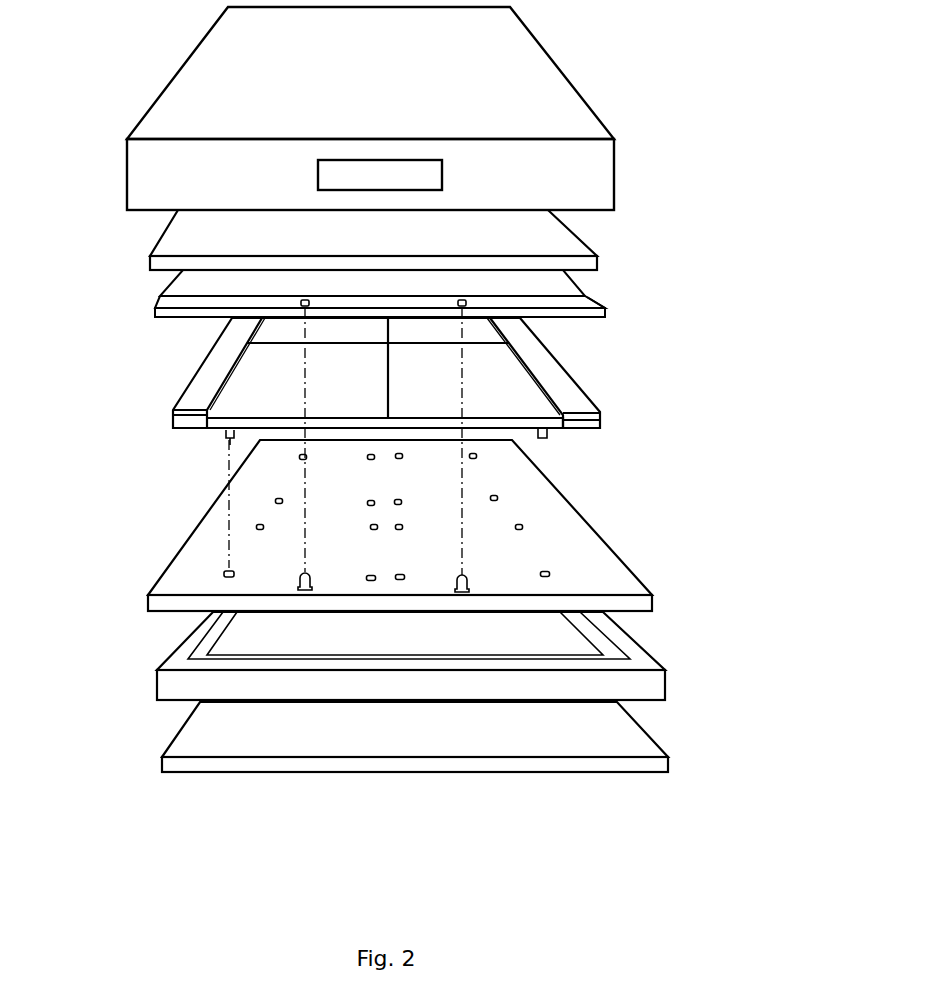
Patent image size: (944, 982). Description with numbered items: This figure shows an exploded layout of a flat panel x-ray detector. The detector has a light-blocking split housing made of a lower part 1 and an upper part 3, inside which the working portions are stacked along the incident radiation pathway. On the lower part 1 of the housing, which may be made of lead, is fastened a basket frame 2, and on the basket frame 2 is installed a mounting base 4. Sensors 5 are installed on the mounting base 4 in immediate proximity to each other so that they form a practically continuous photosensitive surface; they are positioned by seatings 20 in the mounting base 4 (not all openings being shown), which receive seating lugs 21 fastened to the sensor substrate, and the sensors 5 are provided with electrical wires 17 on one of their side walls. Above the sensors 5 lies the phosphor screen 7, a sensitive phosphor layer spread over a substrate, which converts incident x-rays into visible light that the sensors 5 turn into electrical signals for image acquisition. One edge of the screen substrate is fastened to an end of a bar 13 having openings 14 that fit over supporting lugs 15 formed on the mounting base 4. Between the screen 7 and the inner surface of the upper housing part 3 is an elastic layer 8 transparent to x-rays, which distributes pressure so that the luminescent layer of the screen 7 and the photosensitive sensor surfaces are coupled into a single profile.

The lower part of the detector housing 1 is at (195, 750).
The basket frame 2 is at (177, 663).
The upper part of the detector housing 3 is at (525, 62).
The mounting base 4 is at (247, 505).
The sensor 5 is at (275, 390).
The phosphor screen 7 is at (562, 292).
The elastic layer transparent to x-rays 8 is at (557, 240).
The bar 13 is at (585, 307).
The openings 14 is at (300, 301).
The supporting lugs 15 is at (305, 590).
The electrical wires 17 is at (200, 388).
The seating 20 is at (222, 572).
The seating lugs 21 is at (222, 434).